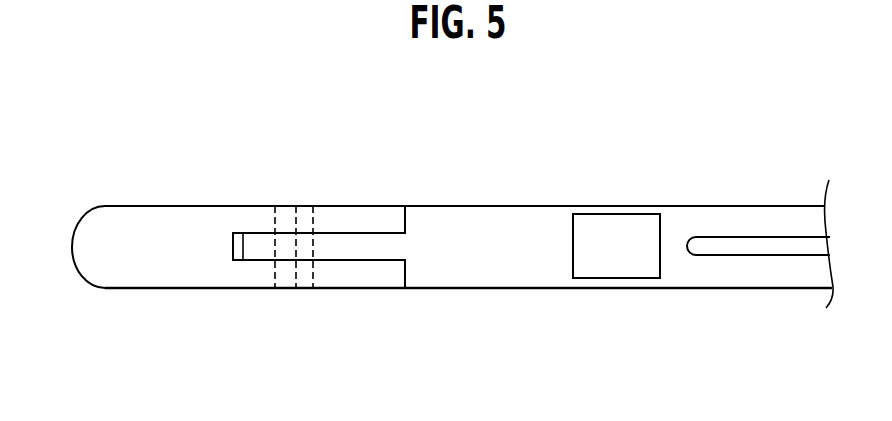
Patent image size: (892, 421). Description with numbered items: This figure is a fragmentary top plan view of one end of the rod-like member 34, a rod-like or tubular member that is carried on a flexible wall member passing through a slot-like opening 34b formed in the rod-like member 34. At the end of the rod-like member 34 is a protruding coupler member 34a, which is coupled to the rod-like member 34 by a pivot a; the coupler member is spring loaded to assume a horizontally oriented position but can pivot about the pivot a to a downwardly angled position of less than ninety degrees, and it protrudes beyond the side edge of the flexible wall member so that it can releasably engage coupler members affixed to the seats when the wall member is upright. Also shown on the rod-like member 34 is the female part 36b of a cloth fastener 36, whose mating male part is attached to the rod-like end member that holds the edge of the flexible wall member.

The rod-like member 34 is at (786, 222).
The protruding coupler member 34a is at (146, 222).
The slot-like opening 34b is at (716, 230).
The fastener 36 is at (647, 214).
The female part 36b is at (586, 222).
The pivot a is at (283, 275).